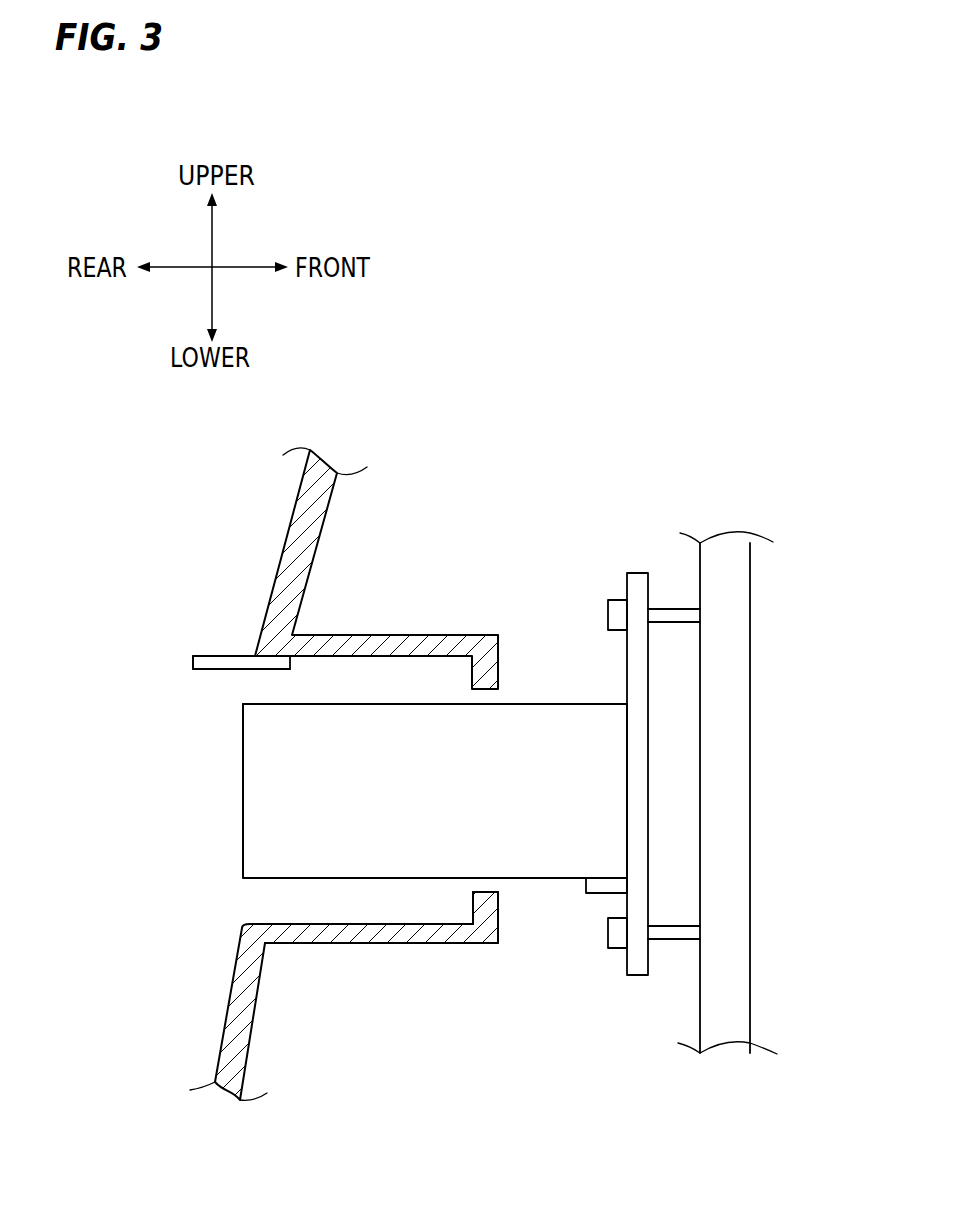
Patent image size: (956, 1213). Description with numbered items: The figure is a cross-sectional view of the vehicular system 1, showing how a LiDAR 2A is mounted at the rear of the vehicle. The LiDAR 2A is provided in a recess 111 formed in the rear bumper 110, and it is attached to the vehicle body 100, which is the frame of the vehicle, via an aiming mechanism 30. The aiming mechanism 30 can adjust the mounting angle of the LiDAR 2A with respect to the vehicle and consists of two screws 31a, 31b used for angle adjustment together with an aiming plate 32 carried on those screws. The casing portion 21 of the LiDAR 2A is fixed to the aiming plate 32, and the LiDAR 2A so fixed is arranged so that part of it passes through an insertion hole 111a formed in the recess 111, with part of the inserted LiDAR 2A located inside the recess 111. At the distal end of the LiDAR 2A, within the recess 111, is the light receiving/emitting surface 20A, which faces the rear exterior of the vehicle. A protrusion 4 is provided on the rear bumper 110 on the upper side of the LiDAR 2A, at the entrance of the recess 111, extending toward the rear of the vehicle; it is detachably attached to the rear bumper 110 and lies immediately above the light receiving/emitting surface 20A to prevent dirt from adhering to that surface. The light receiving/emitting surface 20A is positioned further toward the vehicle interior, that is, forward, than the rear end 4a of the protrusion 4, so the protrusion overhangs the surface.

The vehicular system 1 is at (548, 290).
The vehicle body 100 is at (730, 733).
The aiming mechanism 30 is at (663, 523).
The aiming plate 32 is at (638, 578).
The screw 31a is at (608, 620).
The screw 31b is at (608, 935).
The LiDAR 2A is at (218, 829).
The light receiving/emitting surface 20A is at (243, 762).
The casing portion 21 is at (551, 712).
The protrusion 4 is at (217, 653).
The rear end 4a is at (193, 662).
The rear bumper 110 is at (288, 542).
The recess 111 is at (270, 905).
The insertion hole 111a is at (490, 883).